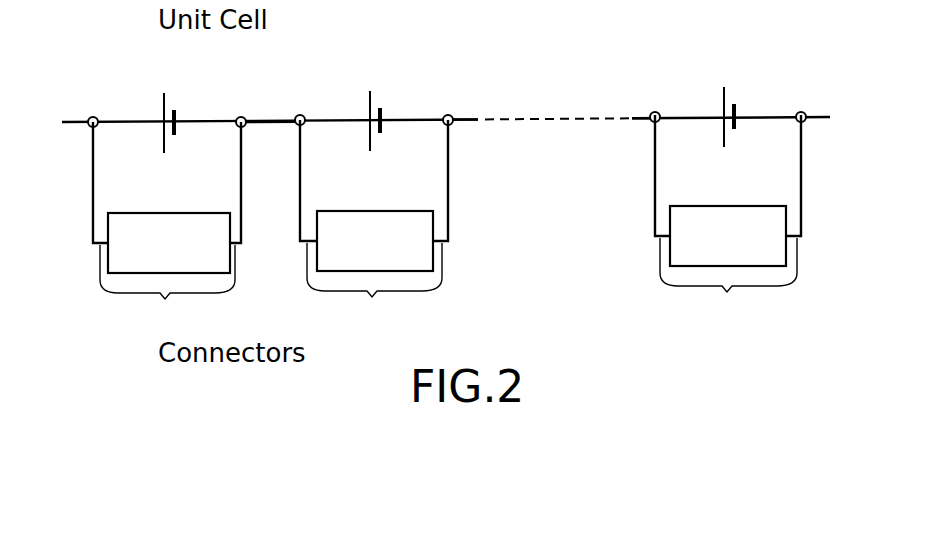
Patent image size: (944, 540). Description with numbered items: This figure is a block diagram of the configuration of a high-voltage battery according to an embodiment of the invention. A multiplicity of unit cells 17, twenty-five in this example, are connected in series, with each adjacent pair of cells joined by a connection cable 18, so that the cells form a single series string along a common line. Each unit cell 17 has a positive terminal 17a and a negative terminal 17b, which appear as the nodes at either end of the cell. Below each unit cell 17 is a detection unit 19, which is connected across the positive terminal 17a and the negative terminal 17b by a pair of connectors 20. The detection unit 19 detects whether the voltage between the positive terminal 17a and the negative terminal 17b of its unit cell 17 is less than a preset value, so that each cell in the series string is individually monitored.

The unit cell 17 is at (166, 92).
The positive terminal 17a is at (93, 115).
The negative terminal 17b is at (241, 115).
The connection cable 18 is at (268, 123).
The detection unit 19 is at (191, 213).
The connector 20 is at (447, 224).